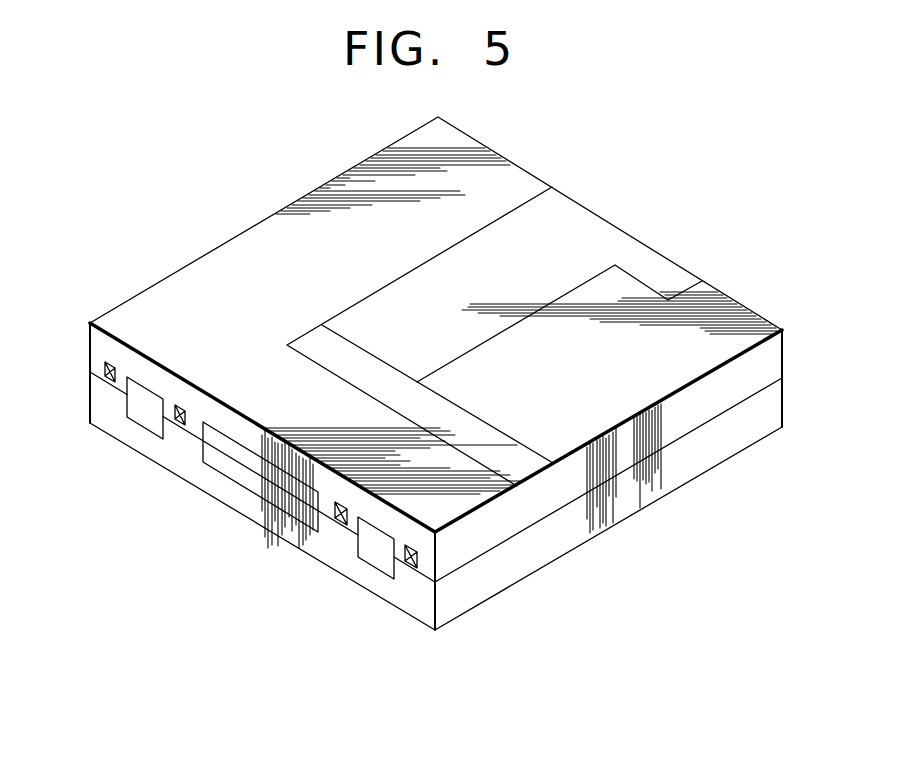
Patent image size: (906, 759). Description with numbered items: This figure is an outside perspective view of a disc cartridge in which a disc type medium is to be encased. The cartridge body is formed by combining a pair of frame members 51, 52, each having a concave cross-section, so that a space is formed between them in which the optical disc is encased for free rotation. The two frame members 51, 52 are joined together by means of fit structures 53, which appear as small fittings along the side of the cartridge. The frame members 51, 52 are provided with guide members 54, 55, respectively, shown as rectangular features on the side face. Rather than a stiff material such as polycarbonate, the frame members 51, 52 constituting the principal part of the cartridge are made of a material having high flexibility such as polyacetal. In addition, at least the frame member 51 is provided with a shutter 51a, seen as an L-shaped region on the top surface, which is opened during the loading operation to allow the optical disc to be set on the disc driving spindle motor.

The frame member 51 is at (207, 268).
The shutter 51a is at (592, 225).
The frame member 52 is at (597, 522).
The fit structures 53 is at (108, 380).
The guide member 54 is at (237, 472).
The guide member 55 is at (145, 395).